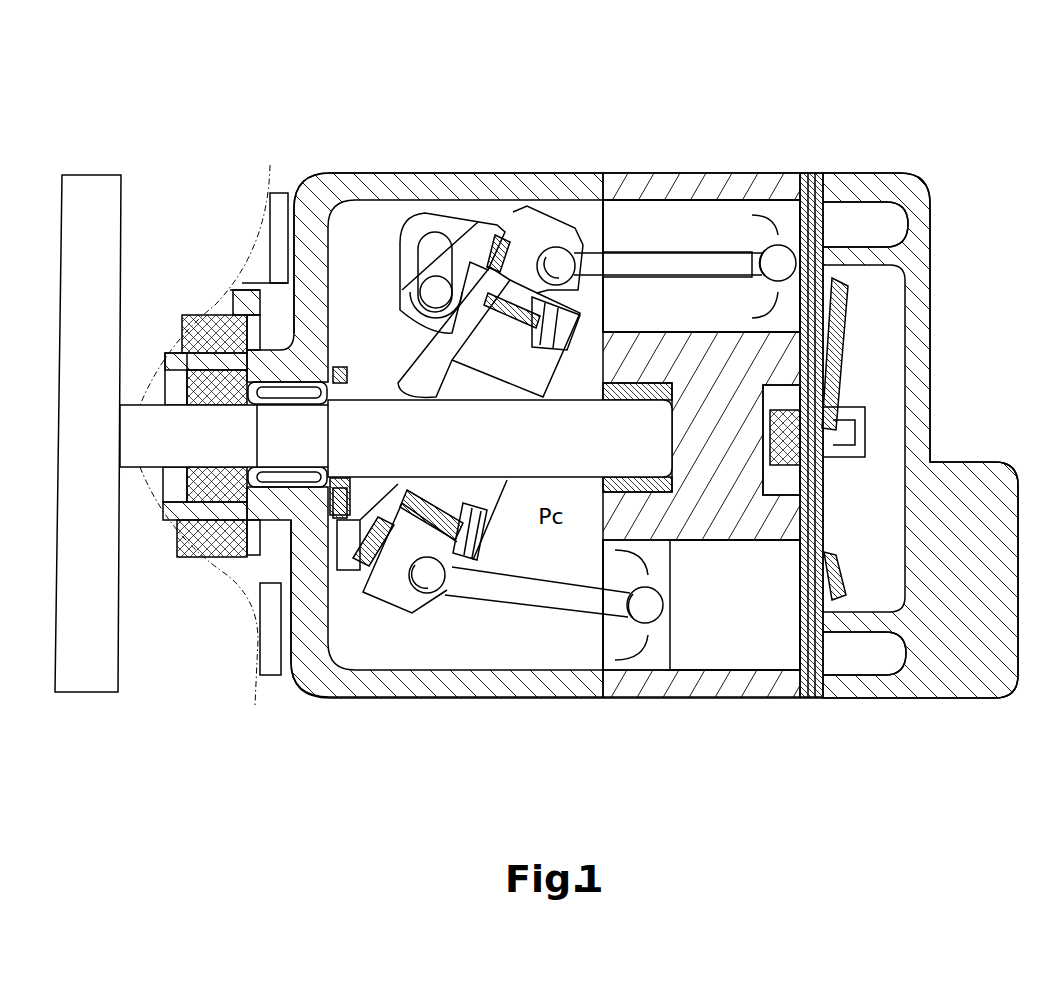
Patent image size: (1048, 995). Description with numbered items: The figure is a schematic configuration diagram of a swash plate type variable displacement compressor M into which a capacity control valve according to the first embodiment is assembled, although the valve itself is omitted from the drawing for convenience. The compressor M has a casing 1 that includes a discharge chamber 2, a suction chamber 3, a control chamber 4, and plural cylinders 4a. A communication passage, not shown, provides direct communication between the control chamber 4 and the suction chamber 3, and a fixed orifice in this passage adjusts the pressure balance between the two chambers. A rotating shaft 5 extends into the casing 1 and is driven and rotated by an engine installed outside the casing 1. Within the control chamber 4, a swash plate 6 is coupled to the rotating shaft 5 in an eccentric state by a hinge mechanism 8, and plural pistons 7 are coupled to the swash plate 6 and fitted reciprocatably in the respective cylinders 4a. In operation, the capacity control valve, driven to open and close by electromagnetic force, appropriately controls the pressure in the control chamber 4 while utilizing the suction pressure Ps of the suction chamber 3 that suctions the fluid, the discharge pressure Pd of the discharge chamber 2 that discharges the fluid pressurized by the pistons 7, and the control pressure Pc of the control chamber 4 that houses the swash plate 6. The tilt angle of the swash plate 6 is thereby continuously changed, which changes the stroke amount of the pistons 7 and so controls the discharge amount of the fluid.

The variable displacement compressor M is at (912, 96).
The casing 1 is at (340, 160).
The discharge chamber 2 is at (880, 365).
The suction chamber 3 is at (897, 222).
The control chamber 4 is at (518, 652).
The cylinders 4a is at (680, 215).
The rotating shaft 5 is at (360, 450).
The swash plate 6 is at (513, 330).
The pistons 7 is at (790, 250).
The hinge mechanism 8 is at (377, 345).